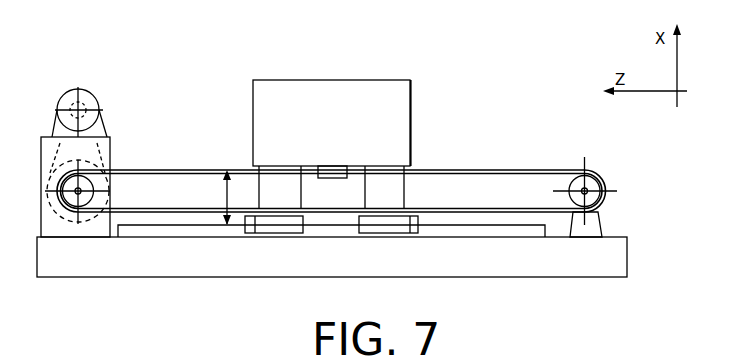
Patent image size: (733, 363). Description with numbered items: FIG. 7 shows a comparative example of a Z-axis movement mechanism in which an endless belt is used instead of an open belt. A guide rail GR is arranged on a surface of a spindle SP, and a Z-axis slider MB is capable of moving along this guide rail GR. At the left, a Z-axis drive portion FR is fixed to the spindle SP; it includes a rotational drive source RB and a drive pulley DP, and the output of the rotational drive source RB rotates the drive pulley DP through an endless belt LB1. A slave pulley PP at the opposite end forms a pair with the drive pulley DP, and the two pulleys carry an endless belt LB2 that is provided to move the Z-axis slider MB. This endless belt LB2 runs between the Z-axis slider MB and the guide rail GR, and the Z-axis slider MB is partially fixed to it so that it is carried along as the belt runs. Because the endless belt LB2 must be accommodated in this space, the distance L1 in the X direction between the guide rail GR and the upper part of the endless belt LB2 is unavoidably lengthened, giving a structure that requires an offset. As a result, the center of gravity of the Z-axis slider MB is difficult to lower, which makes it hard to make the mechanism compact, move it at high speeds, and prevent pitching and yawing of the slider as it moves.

The rotational drive source RB is at (84, 103).
The Z-axis drive portion FR is at (163, 89).
The endless belt LB1 is at (92, 148).
The drive pulley DP is at (98, 168).
The endless belt LB2 is at (463, 171).
The slave pulley PP is at (588, 190).
The Z-axis slider MB is at (332, 144).
The guide rail GR is at (490, 235).
The spindle SP is at (332, 257).
The distance L1 is at (217, 197).